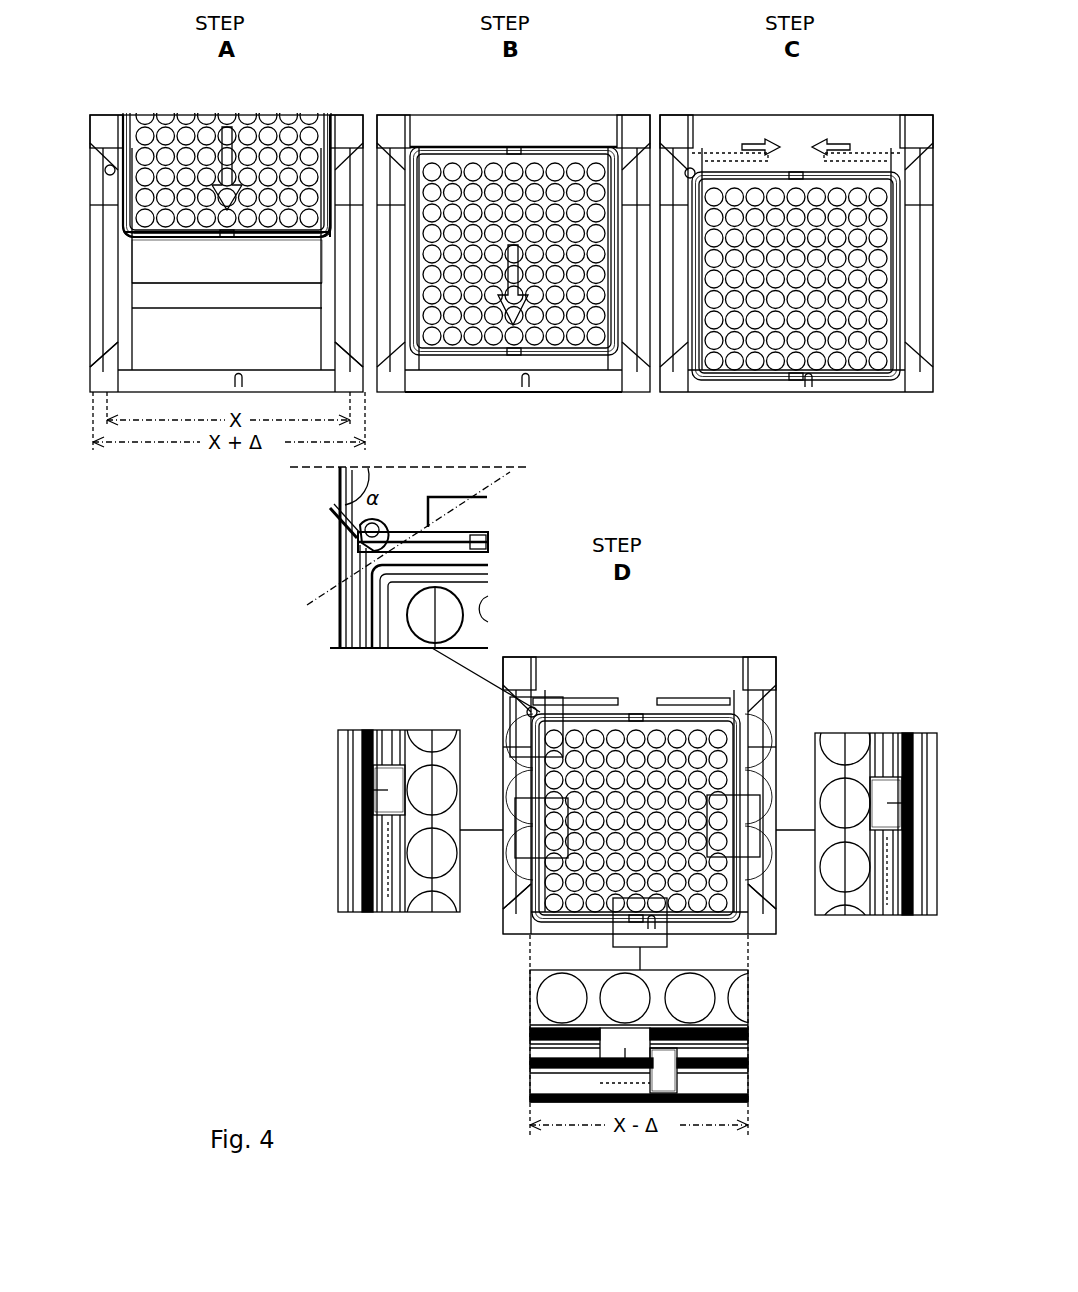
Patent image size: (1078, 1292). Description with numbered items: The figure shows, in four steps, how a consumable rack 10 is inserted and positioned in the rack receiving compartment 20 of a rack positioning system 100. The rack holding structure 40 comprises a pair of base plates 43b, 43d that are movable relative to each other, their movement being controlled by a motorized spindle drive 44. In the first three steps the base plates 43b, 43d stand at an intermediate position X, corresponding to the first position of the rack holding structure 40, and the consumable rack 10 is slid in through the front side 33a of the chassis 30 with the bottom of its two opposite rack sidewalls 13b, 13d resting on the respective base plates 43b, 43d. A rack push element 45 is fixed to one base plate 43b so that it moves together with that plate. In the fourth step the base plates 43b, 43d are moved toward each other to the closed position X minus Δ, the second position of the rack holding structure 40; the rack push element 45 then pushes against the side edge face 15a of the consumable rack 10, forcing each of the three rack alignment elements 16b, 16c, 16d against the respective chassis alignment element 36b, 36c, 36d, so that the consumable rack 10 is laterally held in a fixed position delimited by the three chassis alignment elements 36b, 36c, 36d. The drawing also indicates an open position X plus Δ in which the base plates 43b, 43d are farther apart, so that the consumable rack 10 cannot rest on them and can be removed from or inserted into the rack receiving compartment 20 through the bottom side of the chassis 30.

The consumable rack 10 is at (562, 128).
The rack sidewall 13b is at (125, 190).
The rack sidewall 13d is at (345, 145).
The side edge face 15a is at (356, 539).
The rack alignment element 16b is at (378, 768).
The rack alignment element 16c is at (603, 1038).
The rack alignment element 16d is at (888, 777).
The rack receiving compartment 20 is at (185, 268).
The chassis 30 is at (580, 393).
The front side 33a is at (442, 110).
The chassis alignment element 36b is at (382, 815).
The chassis alignment element 36c is at (670, 1077).
The chassis alignment element 36d is at (882, 870).
The rack holding structure 40 is at (115, 283).
The base plate 43b is at (110, 370).
The base plate 43d is at (355, 372).
The motorized spindle drive 44 is at (235, 310).
The rack push element 45 is at (108, 168).
The rack positioning system 100 is at (866, 105).